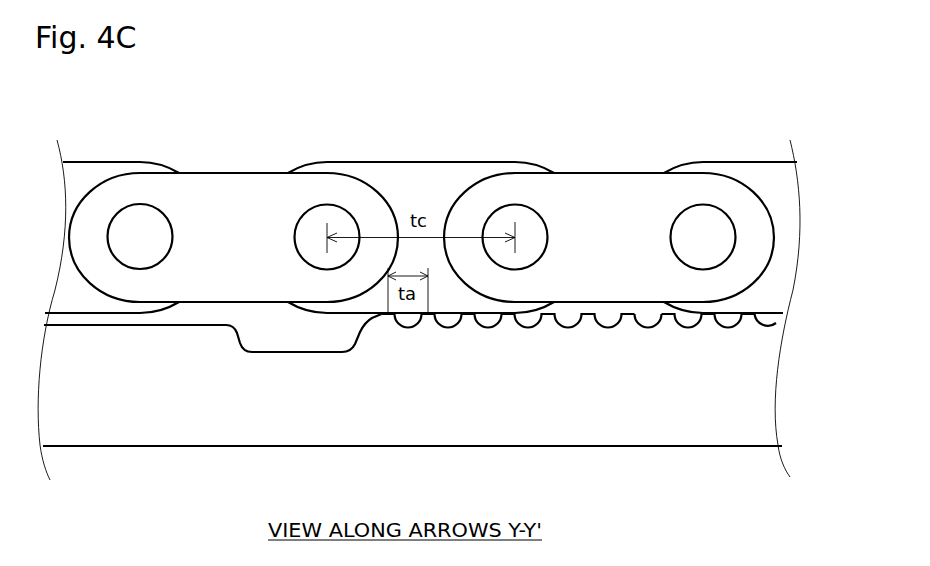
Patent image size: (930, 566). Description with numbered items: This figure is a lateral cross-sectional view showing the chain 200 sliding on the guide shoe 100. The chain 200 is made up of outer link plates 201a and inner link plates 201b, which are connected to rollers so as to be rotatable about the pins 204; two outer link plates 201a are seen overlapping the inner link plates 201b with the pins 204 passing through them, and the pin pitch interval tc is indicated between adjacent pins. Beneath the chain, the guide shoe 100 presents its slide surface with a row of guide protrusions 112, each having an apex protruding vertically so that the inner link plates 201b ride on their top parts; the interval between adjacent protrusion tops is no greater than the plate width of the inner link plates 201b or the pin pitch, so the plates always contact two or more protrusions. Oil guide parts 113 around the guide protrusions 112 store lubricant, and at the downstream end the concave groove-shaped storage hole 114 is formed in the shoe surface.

The guide shoe 100 is at (412, 300).
The guide protrusions 112 is at (510, 323).
The oil guide parts 113 is at (657, 311).
The storage hole 114 is at (303, 335).
The chain 200 is at (607, 125).
The outer link plates 201a is at (233, 182).
The inner link plates 201b is at (447, 183).
The pins 204 is at (137, 228).